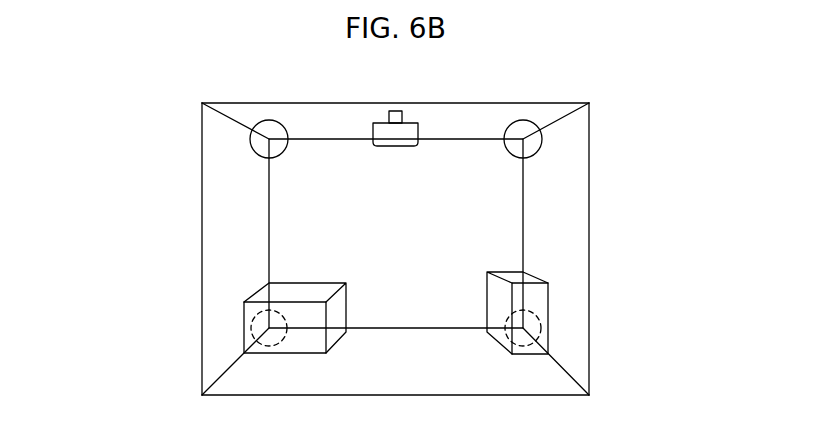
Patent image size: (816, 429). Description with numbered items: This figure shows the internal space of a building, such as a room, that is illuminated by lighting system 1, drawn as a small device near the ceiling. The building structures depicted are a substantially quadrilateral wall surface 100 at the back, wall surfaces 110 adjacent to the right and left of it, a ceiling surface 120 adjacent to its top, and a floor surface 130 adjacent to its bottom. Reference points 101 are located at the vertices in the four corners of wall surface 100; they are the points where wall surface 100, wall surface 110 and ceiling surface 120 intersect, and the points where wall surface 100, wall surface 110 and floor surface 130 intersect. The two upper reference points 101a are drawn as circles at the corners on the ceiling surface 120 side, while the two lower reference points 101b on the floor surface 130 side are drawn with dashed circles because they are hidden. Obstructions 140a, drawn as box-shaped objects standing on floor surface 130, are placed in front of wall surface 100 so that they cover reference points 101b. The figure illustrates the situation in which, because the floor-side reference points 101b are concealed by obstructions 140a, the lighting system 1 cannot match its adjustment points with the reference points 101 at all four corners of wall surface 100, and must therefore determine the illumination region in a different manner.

The lighting system 1 is at (412, 117).
The wall surface 100 is at (470, 176).
The reference points 101 is at (393, 228).
The reference points on the ceiling surface side 101a is at (250, 136).
The reference points on the floor surface side 101b is at (250, 330).
The wall surface 110 is at (235, 233).
The ceiling surface 120 is at (470, 118).
The floor surface 130 is at (500, 372).
The obstructions 140a is at (248, 300).